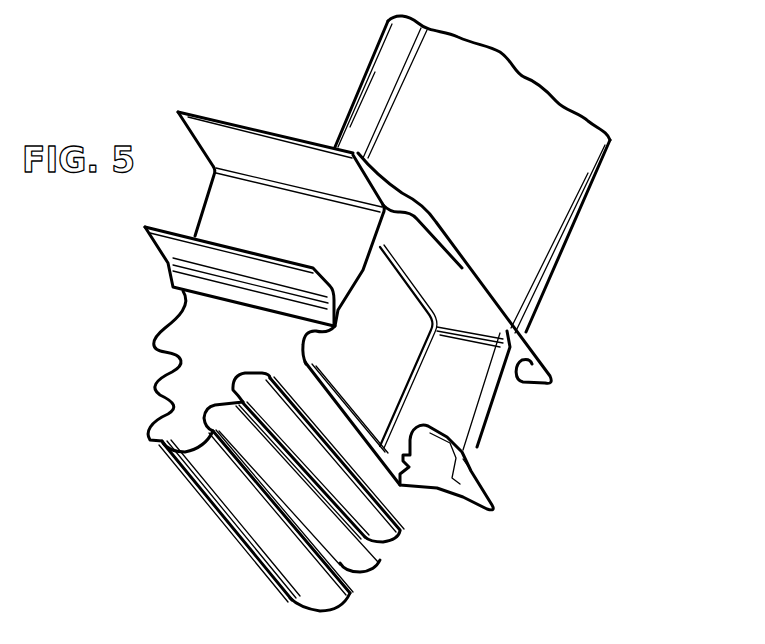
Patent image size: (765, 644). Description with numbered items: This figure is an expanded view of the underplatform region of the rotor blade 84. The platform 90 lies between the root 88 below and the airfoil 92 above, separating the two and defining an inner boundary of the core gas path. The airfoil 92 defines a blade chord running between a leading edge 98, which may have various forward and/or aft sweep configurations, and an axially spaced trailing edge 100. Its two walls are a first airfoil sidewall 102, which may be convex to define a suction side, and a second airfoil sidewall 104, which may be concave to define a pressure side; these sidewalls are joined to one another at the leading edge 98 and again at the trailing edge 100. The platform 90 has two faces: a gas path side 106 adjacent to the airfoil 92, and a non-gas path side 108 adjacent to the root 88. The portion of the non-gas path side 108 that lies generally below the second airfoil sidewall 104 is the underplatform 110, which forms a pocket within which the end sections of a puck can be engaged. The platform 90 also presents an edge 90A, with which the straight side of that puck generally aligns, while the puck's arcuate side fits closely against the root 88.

The mounting bracket 84 is at (636, 174).
The root 88 is at (514, 518).
The platform 90 is at (568, 389).
The edge of the platform 90A is at (438, 216).
The airfoil 92 is at (592, 220).
The leading edge 98 is at (412, 65).
The trailing edge 100 is at (567, 240).
The first airfoil sidewall 102 is at (502, 155).
The second airfoil sidewall 104 is at (365, 110).
The gas path side 106 is at (540, 340).
The non-gas path side 108 is at (482, 340).
The underplatform 110 is at (450, 305).